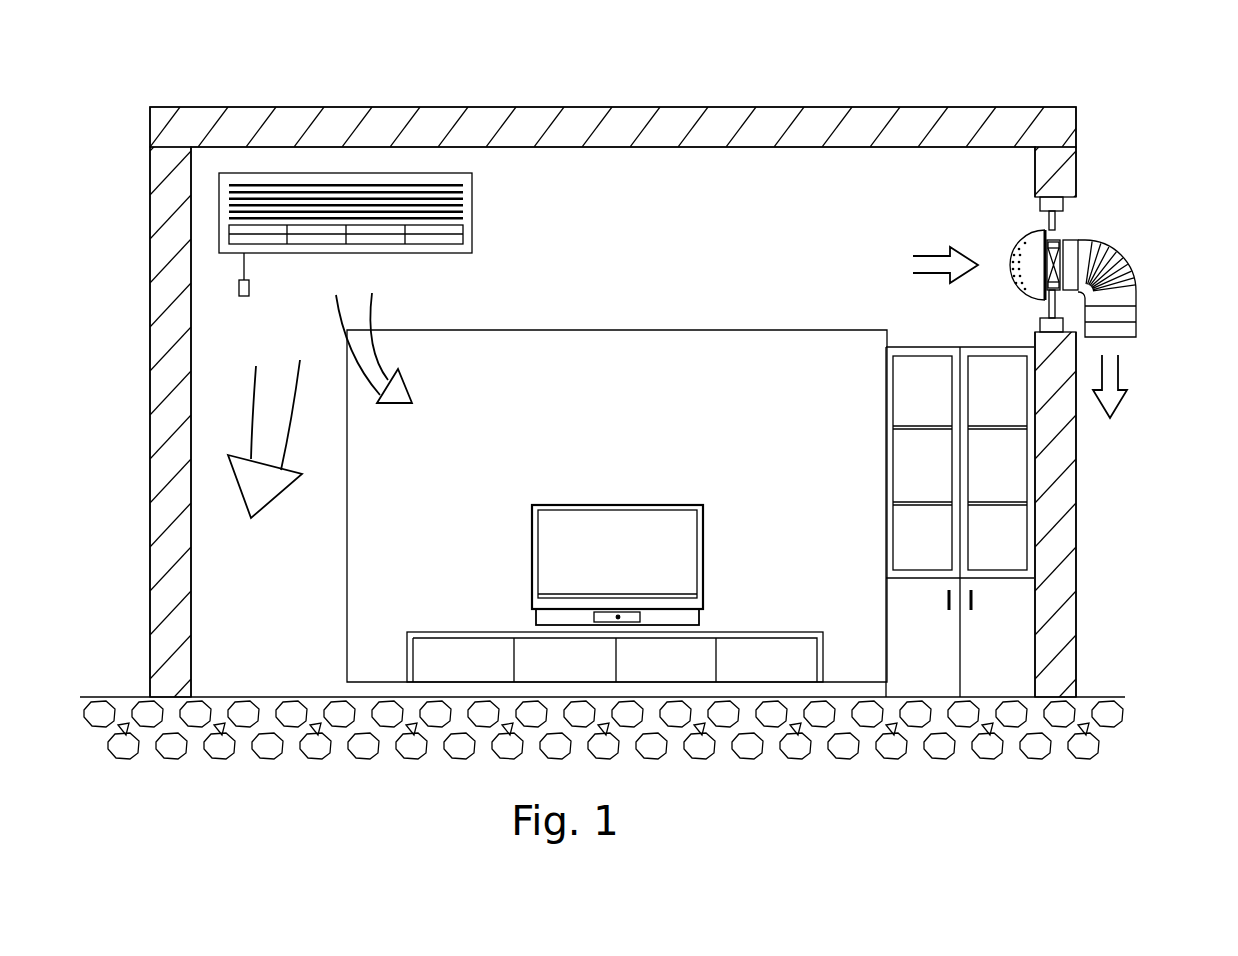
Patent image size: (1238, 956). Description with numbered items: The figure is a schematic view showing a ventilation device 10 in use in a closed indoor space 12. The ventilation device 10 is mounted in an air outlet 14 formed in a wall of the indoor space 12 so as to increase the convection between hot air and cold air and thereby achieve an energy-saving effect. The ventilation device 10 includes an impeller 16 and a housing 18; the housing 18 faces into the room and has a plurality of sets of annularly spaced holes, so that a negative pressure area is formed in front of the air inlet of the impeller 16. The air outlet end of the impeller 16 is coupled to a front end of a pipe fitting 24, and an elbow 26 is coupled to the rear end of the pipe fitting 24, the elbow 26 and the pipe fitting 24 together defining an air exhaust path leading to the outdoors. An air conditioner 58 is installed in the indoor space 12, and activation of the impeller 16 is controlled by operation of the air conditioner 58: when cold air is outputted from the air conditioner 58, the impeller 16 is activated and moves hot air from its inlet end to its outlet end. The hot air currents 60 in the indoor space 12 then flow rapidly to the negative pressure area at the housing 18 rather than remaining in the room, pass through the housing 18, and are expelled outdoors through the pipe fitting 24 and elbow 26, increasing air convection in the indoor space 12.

The ventilation device 10 is at (1117, 194).
The indoor space 12 is at (512, 163).
The air outlet 14 is at (1068, 307).
The impeller 16 is at (1052, 237).
The housing 18 is at (1033, 238).
The pipe fitting 24 is at (1072, 261).
The elbow 26 is at (1122, 330).
The air conditioner 58 is at (296, 178).
The hot air currents 60 is at (928, 245).